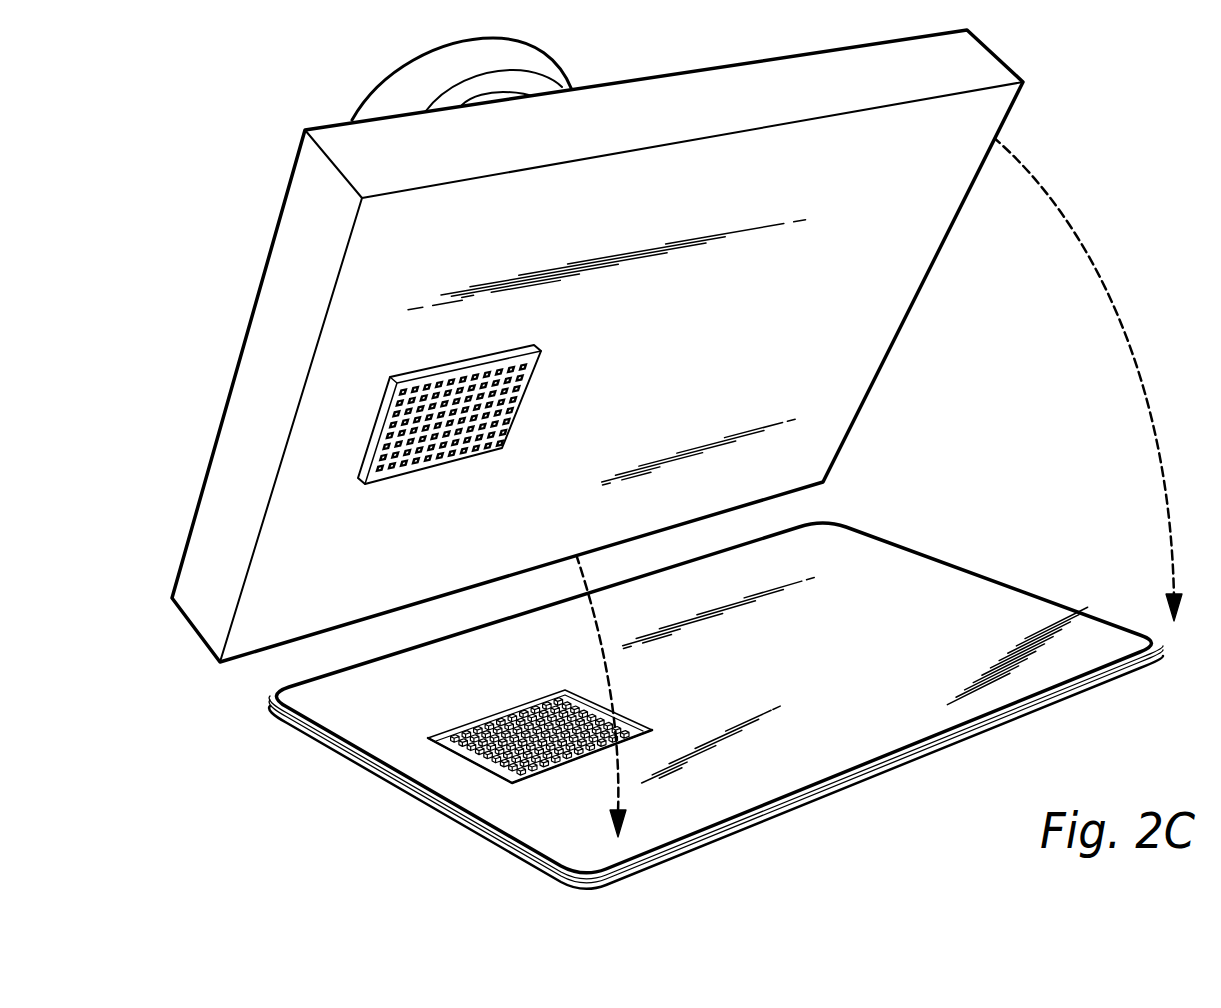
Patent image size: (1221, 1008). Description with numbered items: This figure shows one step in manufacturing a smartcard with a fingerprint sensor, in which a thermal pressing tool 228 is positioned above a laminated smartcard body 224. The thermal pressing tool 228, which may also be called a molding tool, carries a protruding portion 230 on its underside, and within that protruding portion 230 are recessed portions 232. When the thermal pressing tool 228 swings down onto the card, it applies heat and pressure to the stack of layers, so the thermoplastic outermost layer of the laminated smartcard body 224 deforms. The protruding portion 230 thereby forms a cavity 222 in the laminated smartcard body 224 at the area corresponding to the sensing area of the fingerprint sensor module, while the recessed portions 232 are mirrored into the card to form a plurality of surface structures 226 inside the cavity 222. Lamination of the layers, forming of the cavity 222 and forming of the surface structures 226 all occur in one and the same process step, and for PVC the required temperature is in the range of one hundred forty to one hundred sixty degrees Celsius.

The cavity 222 is at (581, 713).
The laminated smartcard body 224 is at (961, 586).
The surface structures 226 is at (533, 720).
The thermal pressing tool 228 is at (897, 337).
The protruding portion 230 is at (505, 444).
The recessed portions 232 is at (433, 445).